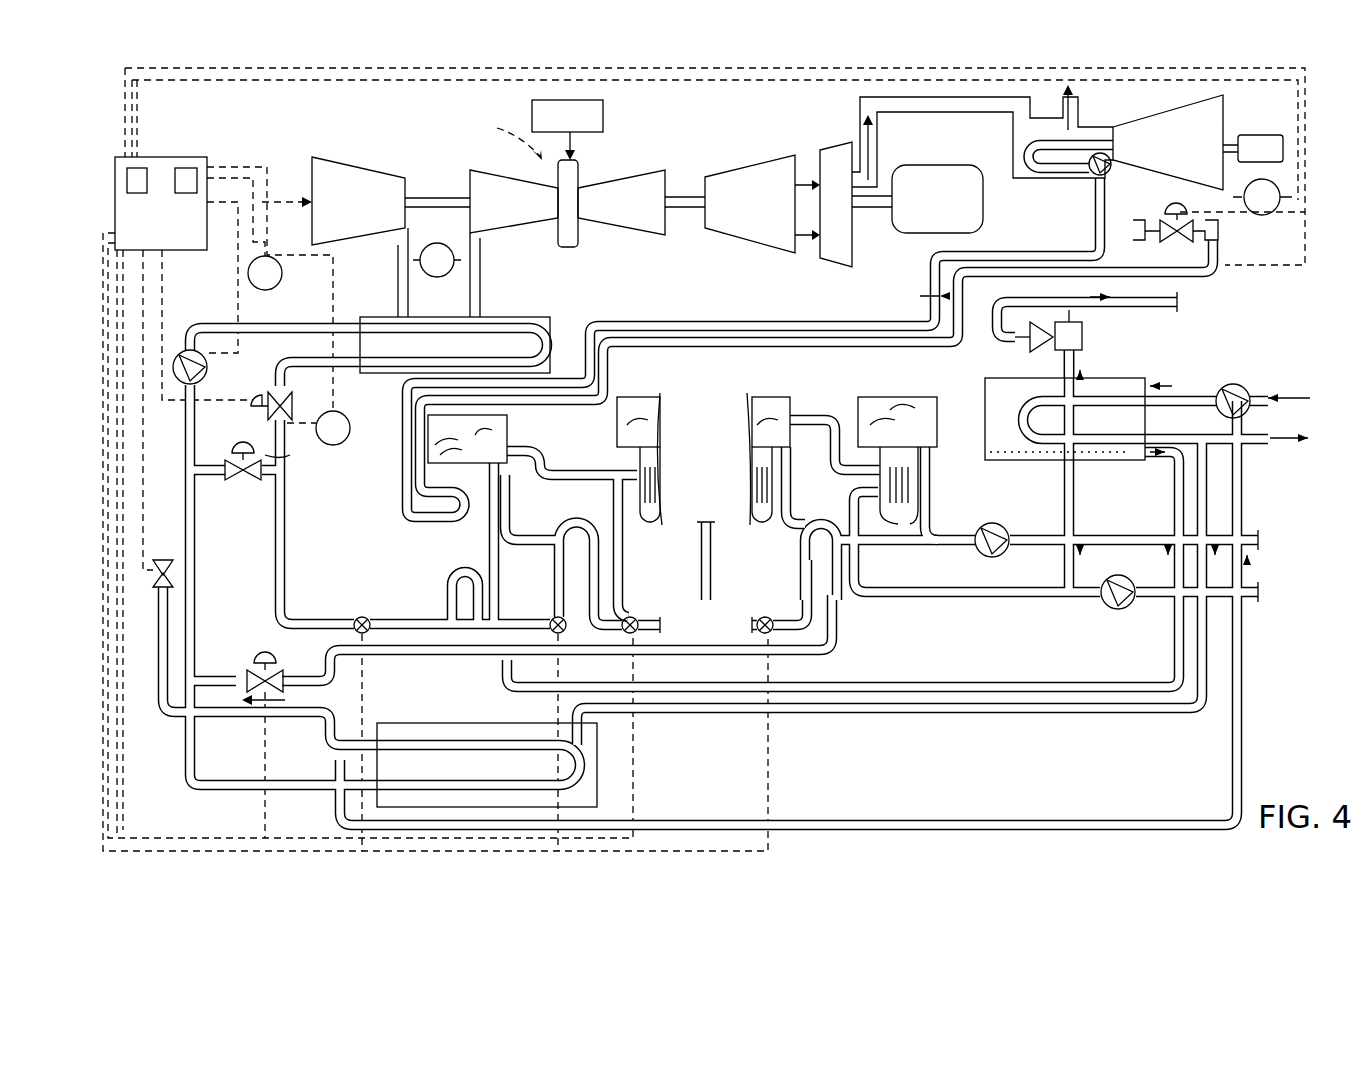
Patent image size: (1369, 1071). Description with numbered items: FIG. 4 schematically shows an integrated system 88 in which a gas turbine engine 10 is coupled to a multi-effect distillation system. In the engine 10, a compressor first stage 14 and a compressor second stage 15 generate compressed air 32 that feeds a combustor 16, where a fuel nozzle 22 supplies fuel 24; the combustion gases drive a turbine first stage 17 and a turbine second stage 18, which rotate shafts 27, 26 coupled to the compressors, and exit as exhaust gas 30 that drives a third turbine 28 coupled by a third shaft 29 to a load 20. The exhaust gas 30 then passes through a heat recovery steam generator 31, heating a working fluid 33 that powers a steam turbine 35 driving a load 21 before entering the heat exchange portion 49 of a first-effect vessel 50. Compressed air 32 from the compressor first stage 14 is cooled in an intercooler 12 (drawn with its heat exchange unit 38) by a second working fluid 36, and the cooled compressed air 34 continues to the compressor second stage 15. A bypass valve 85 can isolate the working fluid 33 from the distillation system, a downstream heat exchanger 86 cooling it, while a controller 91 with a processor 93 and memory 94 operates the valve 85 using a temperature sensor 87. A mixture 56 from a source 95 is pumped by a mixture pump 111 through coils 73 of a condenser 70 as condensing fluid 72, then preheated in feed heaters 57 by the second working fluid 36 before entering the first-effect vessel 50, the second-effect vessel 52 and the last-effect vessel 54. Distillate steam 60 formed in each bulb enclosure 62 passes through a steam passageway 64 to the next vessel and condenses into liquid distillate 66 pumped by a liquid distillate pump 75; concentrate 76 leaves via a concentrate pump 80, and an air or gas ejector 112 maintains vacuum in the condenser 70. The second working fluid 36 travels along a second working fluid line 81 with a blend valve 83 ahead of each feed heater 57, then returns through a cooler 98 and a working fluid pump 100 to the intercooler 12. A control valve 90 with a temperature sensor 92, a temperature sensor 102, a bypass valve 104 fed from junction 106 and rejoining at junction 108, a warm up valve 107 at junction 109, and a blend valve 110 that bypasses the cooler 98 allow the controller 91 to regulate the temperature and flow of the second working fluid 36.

The turbine engine 10 is at (773, 125).
The intercooler 12 is at (548, 320).
The compressor first stage 14 is at (363, 162).
The compressor second stage 15 is at (486, 172).
The combustor 16 is at (568, 248).
The turbine first stage 17 is at (608, 226).
The turbine second stage 18 is at (755, 165).
The load 20 is at (940, 165).
The load 21 is at (1262, 134).
The fuel nozzle 22 is at (603, 116).
The fuel 24 is at (573, 140).
The shaft 26 is at (446, 194).
The shaft 27 is at (502, 118).
The third turbine 28 is at (838, 262).
The third shaft 29 is at (870, 210).
The exhaust gas 30 is at (815, 182).
The heat recovery steam generator 31 is at (1005, 167).
The compressed air 32 is at (392, 298).
The working fluid 33 is at (1090, 145).
The cooled compressed air 34 is at (490, 252).
The steam turbine 35 is at (1175, 110).
The second working fluid 36 is at (300, 358).
The intercooler 38 is at (500, 322).
The heat exchange portion 49 is at (466, 548).
The first-effect vessel 50 is at (507, 437).
The second-effect vessel 52 is at (660, 392).
The last-effect vessel 54 is at (888, 400).
The mixture 56 is at (850, 672).
The feed heater 57 is at (462, 590).
The distillate steam 60 is at (470, 423).
The bulb enclosure 62 is at (577, 476).
The steam passageway 64 is at (537, 531).
The liquid distillate 66 is at (724, 555).
The condenser 70 is at (1000, 465).
The condensing fluid 72 is at (1165, 388).
The coils 73 is at (1040, 380).
The liquid distillate pump 75 is at (1148, 605).
The concentrate 76 is at (1035, 525).
The concentrate pump 80 is at (1003, 555).
The second working fluid line 81 is at (518, 585).
The blend valve 83 is at (365, 620).
The bypass valve 85 is at (1183, 240).
The heat exchanger 86 is at (1170, 215).
The temperature sensor 87 is at (1288, 201).
The integrated system 88 is at (1302, 165).
The control valve 90 is at (290, 415).
The controller 91 is at (190, 157).
The temperature sensor 92 is at (350, 432).
The processor 93 is at (147, 178).
The memory 94 is at (186, 168).
The source 95 is at (1318, 366).
The cooler 98 is at (600, 765).
The working fluid pump 100 is at (180, 350).
The temperature sensor 102 is at (282, 270).
The bypass valve 104 is at (158, 595).
The junction 106 is at (224, 446).
The warm up valve 107 is at (250, 485).
The junction 108 is at (390, 740).
The junction 109 is at (280, 457).
The blend valve 110 is at (258, 663).
The mixture pump 111 is at (1232, 384).
The air or gas ejector 112 is at (1083, 324).